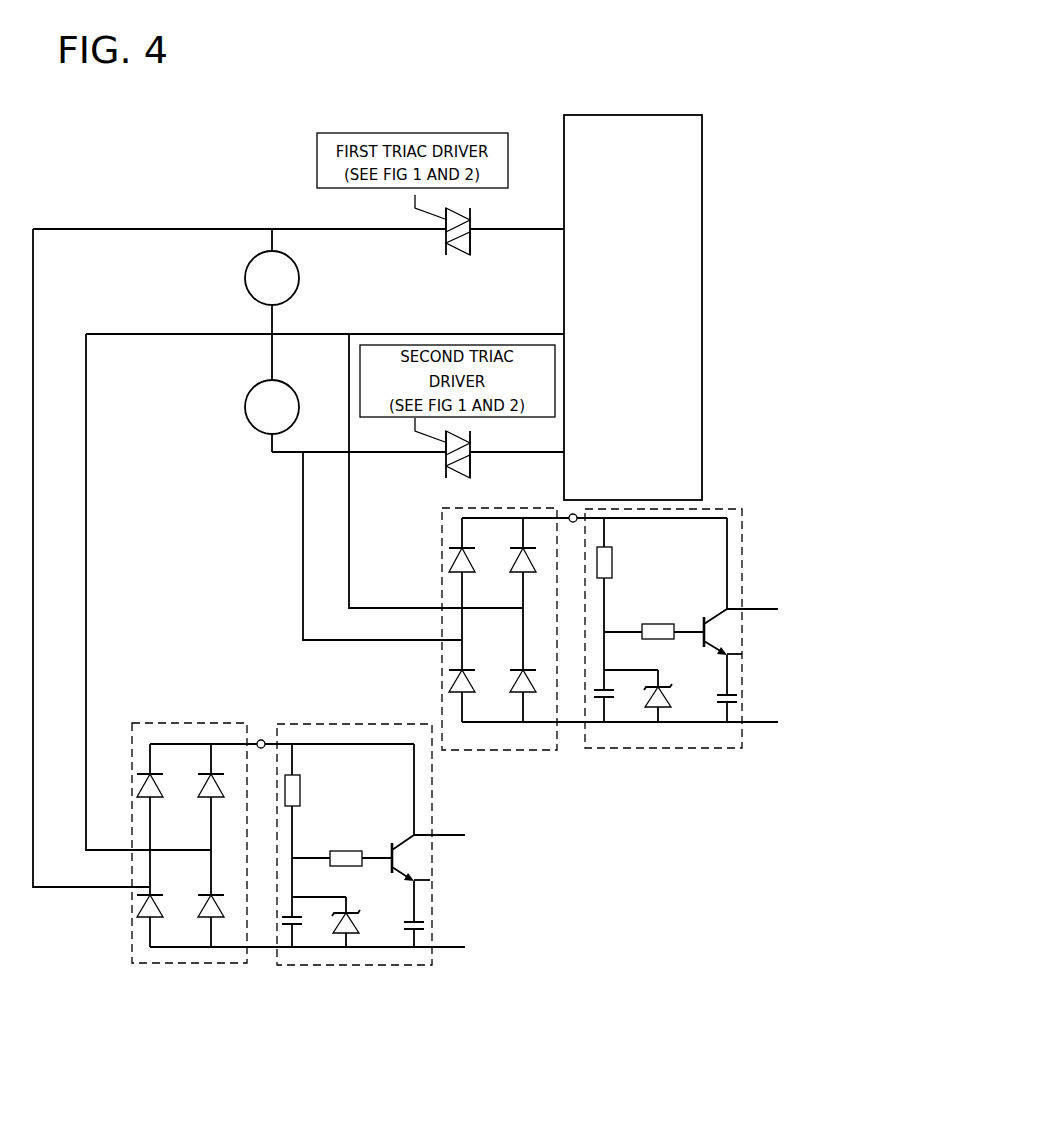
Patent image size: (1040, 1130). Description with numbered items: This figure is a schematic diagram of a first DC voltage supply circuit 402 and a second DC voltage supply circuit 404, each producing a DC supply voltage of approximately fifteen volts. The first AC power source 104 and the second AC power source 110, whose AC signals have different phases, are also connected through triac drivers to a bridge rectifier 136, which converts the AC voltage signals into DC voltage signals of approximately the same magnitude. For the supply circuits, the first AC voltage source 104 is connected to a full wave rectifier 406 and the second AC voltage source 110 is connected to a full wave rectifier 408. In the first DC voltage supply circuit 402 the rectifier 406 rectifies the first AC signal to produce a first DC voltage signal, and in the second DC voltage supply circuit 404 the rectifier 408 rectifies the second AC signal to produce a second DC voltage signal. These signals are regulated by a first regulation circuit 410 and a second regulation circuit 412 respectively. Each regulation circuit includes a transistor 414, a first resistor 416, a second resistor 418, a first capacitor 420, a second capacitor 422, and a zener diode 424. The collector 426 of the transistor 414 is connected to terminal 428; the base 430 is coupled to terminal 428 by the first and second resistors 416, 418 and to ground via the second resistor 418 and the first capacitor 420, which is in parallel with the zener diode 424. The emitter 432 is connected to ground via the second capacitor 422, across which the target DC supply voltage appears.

The first AC power source 104 is at (244, 284).
The second AC power source 110 is at (244, 408).
The bridge rectifier 136 is at (703, 217).
The first DC voltage supply circuit 402 is at (262, 705).
The second DC voltage supply circuit 404 is at (588, 775).
The full wave rectifier 406 is at (186, 722).
The full wave rectifier 408 is at (500, 752).
The first regulation circuit 410 is at (372, 723).
The second regulation circuit 412 is at (657, 749).
The transistor 414 is at (703, 603).
The first resistor 416 is at (613, 563).
The second resistor 418 is at (664, 623).
The first capacitor 420 is at (597, 697).
The second capacitor 422 is at (738, 703).
The zener diode 424 is at (672, 704).
The collector 426 is at (733, 611).
The terminal 428 is at (573, 513).
The base 430 is at (690, 634).
The emitter 432 is at (742, 654).